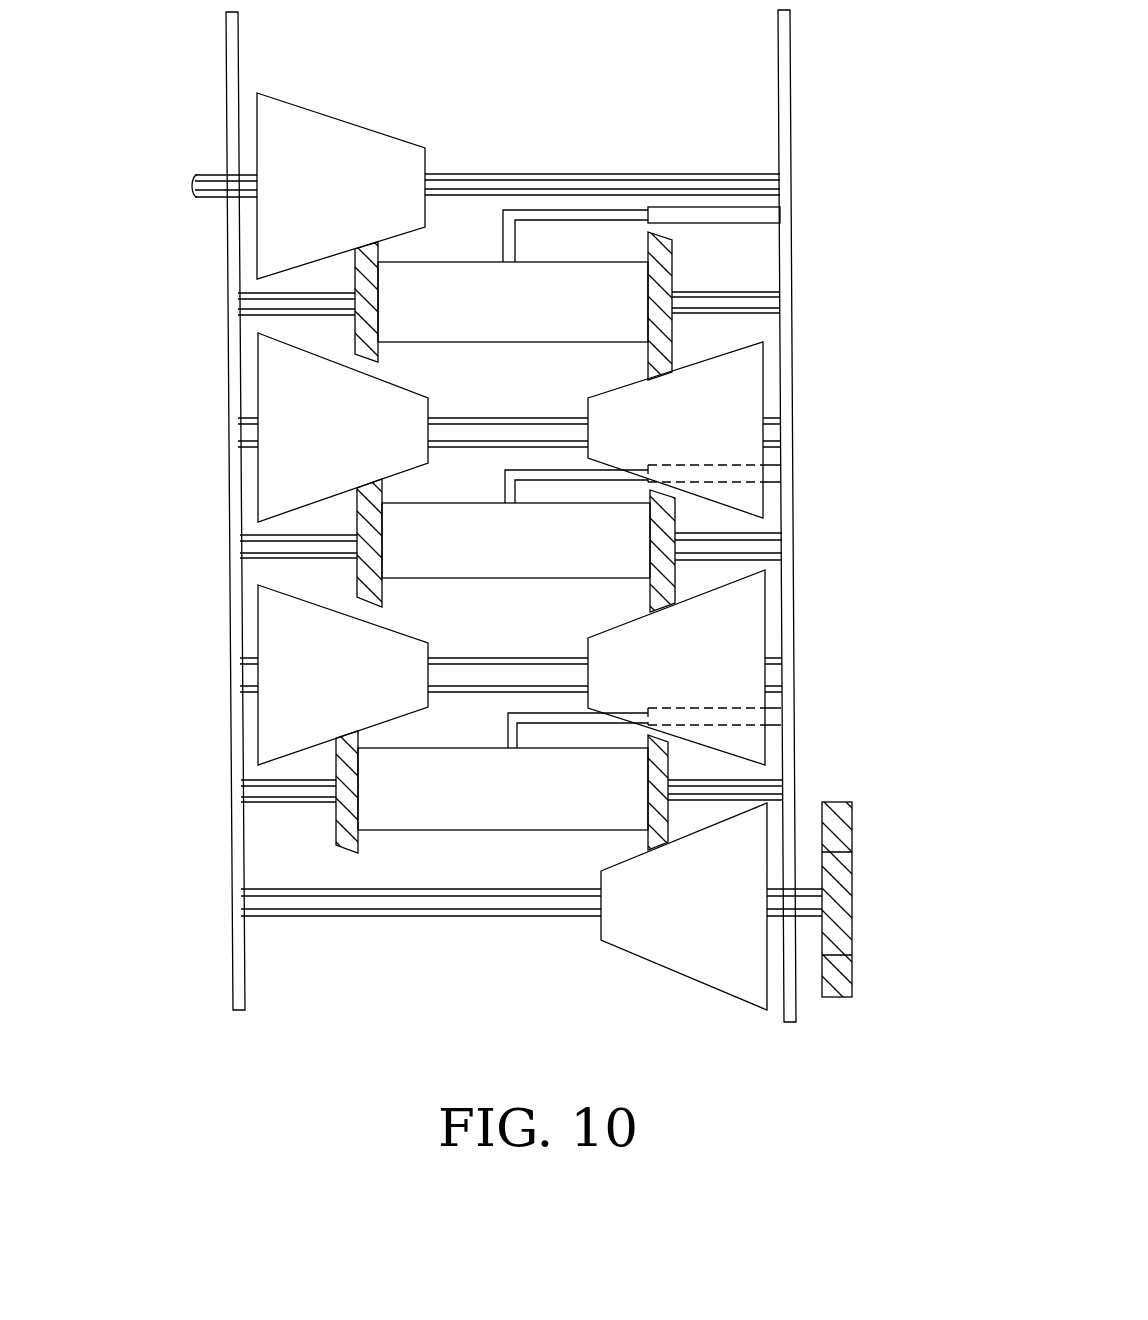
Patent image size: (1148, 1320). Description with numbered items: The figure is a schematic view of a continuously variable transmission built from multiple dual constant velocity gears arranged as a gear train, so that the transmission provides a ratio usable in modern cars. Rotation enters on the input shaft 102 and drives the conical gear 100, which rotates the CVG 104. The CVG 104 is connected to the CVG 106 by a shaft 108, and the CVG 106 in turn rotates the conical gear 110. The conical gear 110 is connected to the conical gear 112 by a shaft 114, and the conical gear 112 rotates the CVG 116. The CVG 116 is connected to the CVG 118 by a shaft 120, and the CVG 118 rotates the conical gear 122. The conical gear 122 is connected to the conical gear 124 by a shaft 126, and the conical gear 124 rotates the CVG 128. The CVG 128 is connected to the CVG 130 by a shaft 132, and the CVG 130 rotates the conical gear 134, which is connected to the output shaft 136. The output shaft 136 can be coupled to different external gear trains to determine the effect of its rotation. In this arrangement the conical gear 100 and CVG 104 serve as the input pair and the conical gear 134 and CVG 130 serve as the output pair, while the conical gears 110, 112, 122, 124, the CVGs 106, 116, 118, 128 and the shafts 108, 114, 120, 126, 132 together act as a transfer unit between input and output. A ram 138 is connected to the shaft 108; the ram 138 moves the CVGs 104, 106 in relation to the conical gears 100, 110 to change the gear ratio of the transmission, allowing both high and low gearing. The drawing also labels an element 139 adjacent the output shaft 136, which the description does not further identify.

The conical gear 100 is at (350, 206).
The input shaft 102 is at (195, 183).
The CVG 104 is at (368, 342).
The CVG 106 is at (660, 268).
The shaft 108 is at (527, 309).
The conical gear 110 is at (712, 443).
The conical gear 112 is at (353, 444).
The shaft 114 is at (513, 432).
The CVG 116 is at (373, 580).
The CVG 118 is at (663, 580).
The shaft 120 is at (525, 554).
The conical gear 122 is at (714, 683).
The conical gear 124 is at (348, 688).
The shaft 126 is at (505, 672).
The CVG 128 is at (348, 823).
The CVG 130 is at (658, 823).
The shaft 132 is at (263, 548).
The conical gear 134 is at (720, 924).
The output shaft 136 is at (805, 917).
The ram 138 is at (727, 218).
The bearing block 139 is at (835, 838).